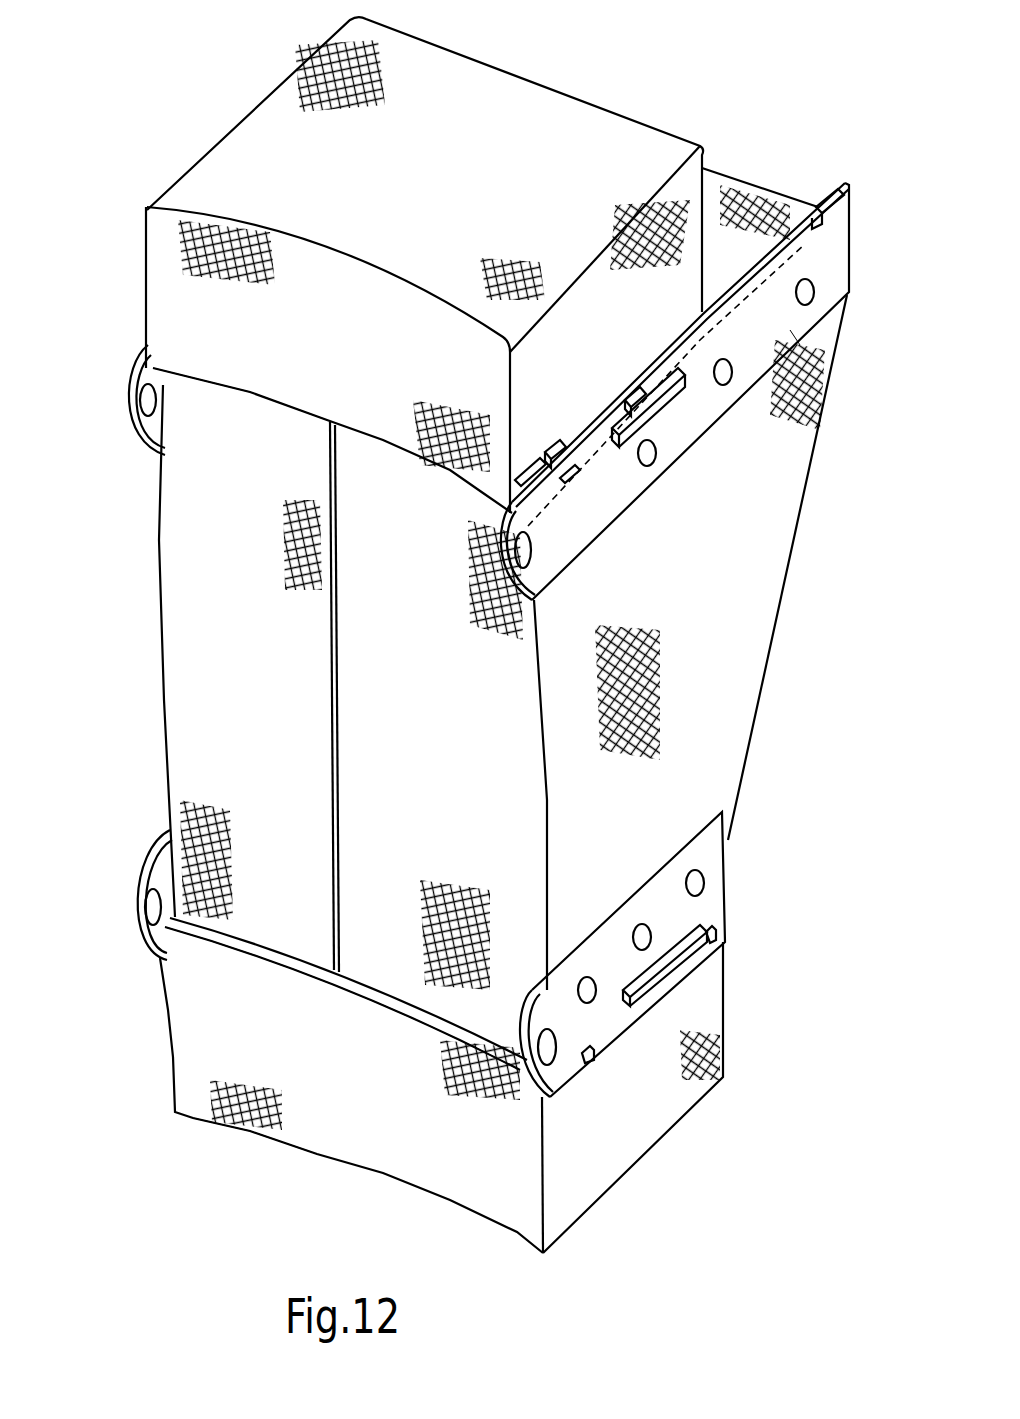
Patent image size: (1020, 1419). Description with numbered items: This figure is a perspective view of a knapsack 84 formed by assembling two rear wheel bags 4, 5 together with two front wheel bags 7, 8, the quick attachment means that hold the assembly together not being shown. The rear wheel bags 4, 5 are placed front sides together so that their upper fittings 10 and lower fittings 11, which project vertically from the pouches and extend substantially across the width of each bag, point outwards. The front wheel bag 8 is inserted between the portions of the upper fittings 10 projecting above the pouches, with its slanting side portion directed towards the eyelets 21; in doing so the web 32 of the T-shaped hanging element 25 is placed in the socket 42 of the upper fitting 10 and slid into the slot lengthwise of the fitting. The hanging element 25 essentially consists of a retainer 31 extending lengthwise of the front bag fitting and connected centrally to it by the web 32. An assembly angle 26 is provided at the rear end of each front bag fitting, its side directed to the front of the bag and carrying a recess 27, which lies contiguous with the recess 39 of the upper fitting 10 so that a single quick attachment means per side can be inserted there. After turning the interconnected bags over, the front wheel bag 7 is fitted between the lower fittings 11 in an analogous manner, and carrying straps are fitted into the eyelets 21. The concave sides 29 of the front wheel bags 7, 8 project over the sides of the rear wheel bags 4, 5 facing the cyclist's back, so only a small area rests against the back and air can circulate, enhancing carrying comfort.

The rear wheel bag 4 is at (482, 820).
The rear wheel bag 5 is at (185, 677).
The front wheel bag 7 is at (402, 1138).
The front wheel bag 8 is at (603, 172).
The upper fitting 10 is at (832, 195).
The lower fitting 11 is at (705, 903).
The eyelet 21 is at (132, 437).
The T-shaped hanging element 25 is at (670, 414).
The assembly angle 26 is at (542, 465).
The recess 27 is at (548, 440).
The concave side 29 is at (200, 325).
The retainer 31 is at (684, 390).
The web 32 is at (790, 343).
The recess 39 is at (574, 471).
The socket 42 is at (612, 385).
The knapsack 84 is at (285, 1165).